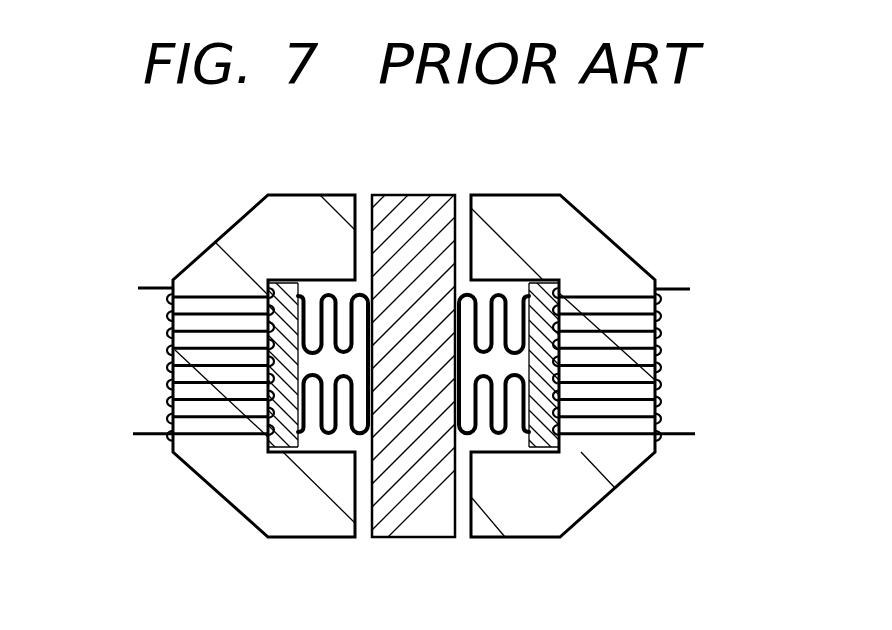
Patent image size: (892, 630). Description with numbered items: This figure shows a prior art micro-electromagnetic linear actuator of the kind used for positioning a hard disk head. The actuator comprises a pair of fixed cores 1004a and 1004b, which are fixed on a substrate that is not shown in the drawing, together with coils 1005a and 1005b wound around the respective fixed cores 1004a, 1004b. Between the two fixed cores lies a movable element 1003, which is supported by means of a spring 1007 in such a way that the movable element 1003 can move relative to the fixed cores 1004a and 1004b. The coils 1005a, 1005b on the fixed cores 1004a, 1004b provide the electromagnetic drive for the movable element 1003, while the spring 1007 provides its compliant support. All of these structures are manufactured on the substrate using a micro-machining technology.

The movable element 1003 is at (404, 200).
The fixed core 1004a is at (211, 267).
The fixed core 1004b is at (616, 267).
The coil 1005a is at (172, 365).
The coil 1005b is at (665, 365).
The spring 1007 is at (330, 437).